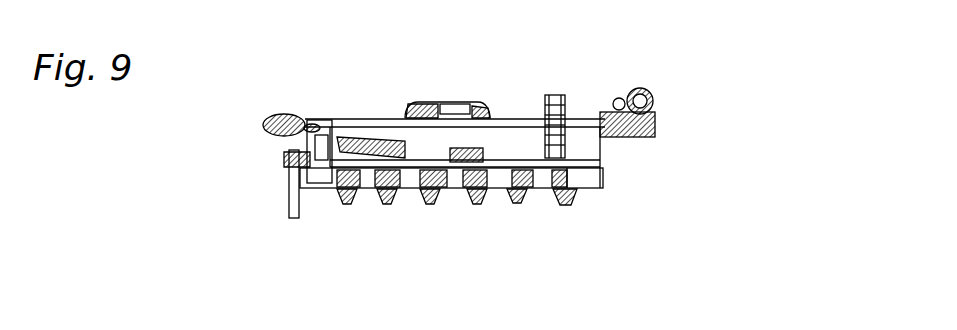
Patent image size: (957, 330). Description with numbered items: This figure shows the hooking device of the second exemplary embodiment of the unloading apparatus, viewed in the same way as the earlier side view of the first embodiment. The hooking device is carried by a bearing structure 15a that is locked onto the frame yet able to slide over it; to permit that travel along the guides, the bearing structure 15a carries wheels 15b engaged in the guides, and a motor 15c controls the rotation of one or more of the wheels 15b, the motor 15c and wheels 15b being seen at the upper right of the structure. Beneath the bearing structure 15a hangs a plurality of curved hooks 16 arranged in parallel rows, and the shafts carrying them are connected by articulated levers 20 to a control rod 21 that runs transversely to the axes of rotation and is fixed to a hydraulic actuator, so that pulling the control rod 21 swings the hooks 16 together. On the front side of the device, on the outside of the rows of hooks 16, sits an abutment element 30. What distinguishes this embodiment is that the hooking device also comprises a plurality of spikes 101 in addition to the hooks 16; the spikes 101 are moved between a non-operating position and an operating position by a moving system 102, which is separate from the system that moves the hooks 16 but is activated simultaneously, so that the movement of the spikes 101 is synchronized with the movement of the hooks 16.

The bearing structure 15a is at (337, 128).
The wheels 15b is at (268, 120).
The motor 15c is at (652, 96).
The curved hooks 16 is at (350, 196).
The articulated levers 20 is at (487, 160).
The control rod 21 is at (383, 148).
The abutment element 30 is at (282, 184).
The spikes 101 is at (343, 192).
The moving system 102 is at (567, 114).